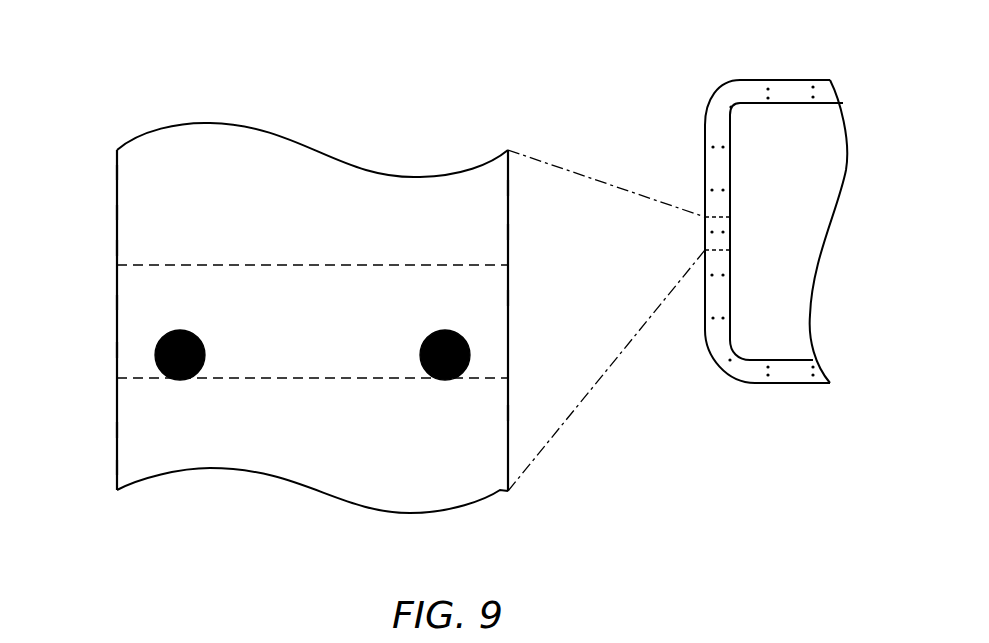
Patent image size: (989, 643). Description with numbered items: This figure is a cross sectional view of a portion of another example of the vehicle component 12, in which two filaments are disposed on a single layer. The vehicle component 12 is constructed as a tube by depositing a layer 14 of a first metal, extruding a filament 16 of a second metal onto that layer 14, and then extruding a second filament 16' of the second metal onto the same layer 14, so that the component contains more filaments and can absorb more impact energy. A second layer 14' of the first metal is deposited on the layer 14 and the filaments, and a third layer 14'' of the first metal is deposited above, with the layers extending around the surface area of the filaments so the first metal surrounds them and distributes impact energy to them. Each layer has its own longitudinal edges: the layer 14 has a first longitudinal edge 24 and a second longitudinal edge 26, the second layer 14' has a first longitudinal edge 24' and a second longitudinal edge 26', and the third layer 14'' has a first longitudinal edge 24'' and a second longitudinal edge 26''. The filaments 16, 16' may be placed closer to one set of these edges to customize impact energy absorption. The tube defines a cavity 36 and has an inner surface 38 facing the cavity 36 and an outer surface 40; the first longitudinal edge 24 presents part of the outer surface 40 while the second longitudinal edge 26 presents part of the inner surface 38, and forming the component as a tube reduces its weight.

The vehicle component 12 is at (724, 68).
The layer 14 is at (81, 417).
The second layer 14' is at (78, 337).
The third layer 14'' is at (77, 236).
The filament 16 is at (194, 335).
The second filament 16' is at (429, 335).
The first longitudinal edge 24 is at (81, 481).
The first longitudinal edge 24' is at (78, 290).
The first longitudinal edge 24'' is at (77, 199).
The second longitudinal edge 26 is at (547, 397).
The second longitudinal edge 26' is at (549, 310).
The second longitudinal edge 26'' is at (551, 200).
The cavity 36 is at (750, 178).
The inner surface 38 is at (508, 232).
The outer surface 40 is at (117, 172).